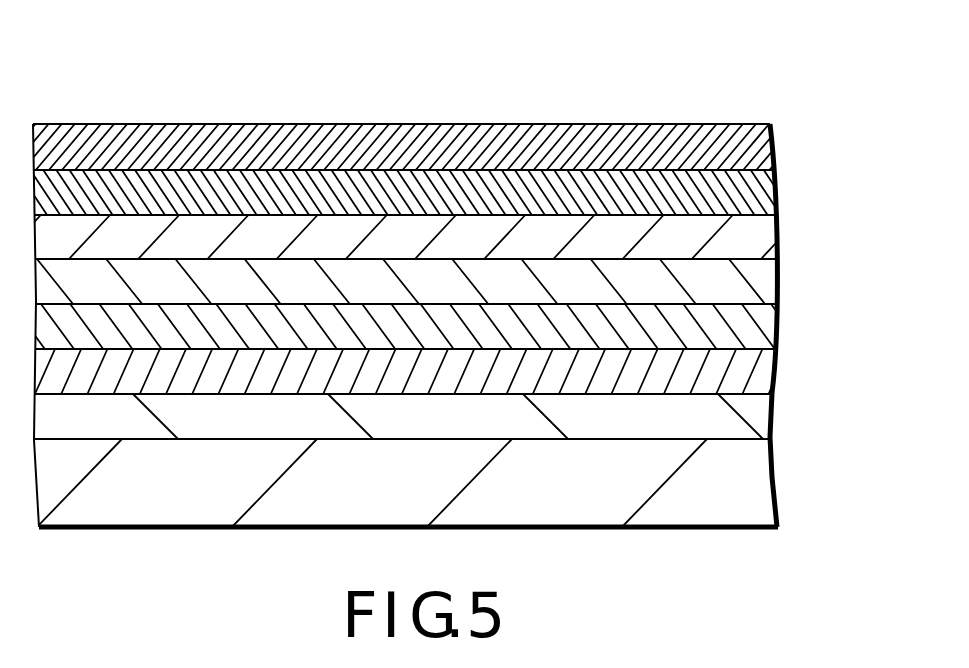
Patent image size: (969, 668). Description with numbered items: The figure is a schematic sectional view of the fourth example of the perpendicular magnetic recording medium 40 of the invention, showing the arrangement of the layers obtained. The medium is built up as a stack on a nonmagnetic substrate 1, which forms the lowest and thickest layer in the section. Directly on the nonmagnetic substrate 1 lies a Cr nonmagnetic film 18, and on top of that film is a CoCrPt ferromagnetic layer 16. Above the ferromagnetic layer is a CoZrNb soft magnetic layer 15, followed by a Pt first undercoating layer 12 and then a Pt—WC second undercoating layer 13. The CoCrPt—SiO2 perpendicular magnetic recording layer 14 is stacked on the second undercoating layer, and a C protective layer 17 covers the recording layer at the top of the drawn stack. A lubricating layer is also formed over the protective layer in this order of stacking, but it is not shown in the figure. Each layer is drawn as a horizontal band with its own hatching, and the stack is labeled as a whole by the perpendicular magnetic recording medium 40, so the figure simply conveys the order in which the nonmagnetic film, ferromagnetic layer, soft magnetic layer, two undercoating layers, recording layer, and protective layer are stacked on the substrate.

The perpendicular magnetic recording medium 40 is at (748, 79).
The C protective layer 17 is at (773, 141).
The CoCrPt—SiO2 perpendicular magnetic recording layer 14 is at (765, 188).
The Pt—WC second undercoating layer 13 is at (760, 236).
The Pt first undercoating layer 12 is at (762, 282).
The CoZrNb soft magnetic layer 15 is at (772, 326).
The CoCrPt ferromagnetic layer 16 is at (760, 372).
The Cr nonmagnetic film 18 is at (762, 418).
The nonmagnetic substrate 1 is at (762, 485).